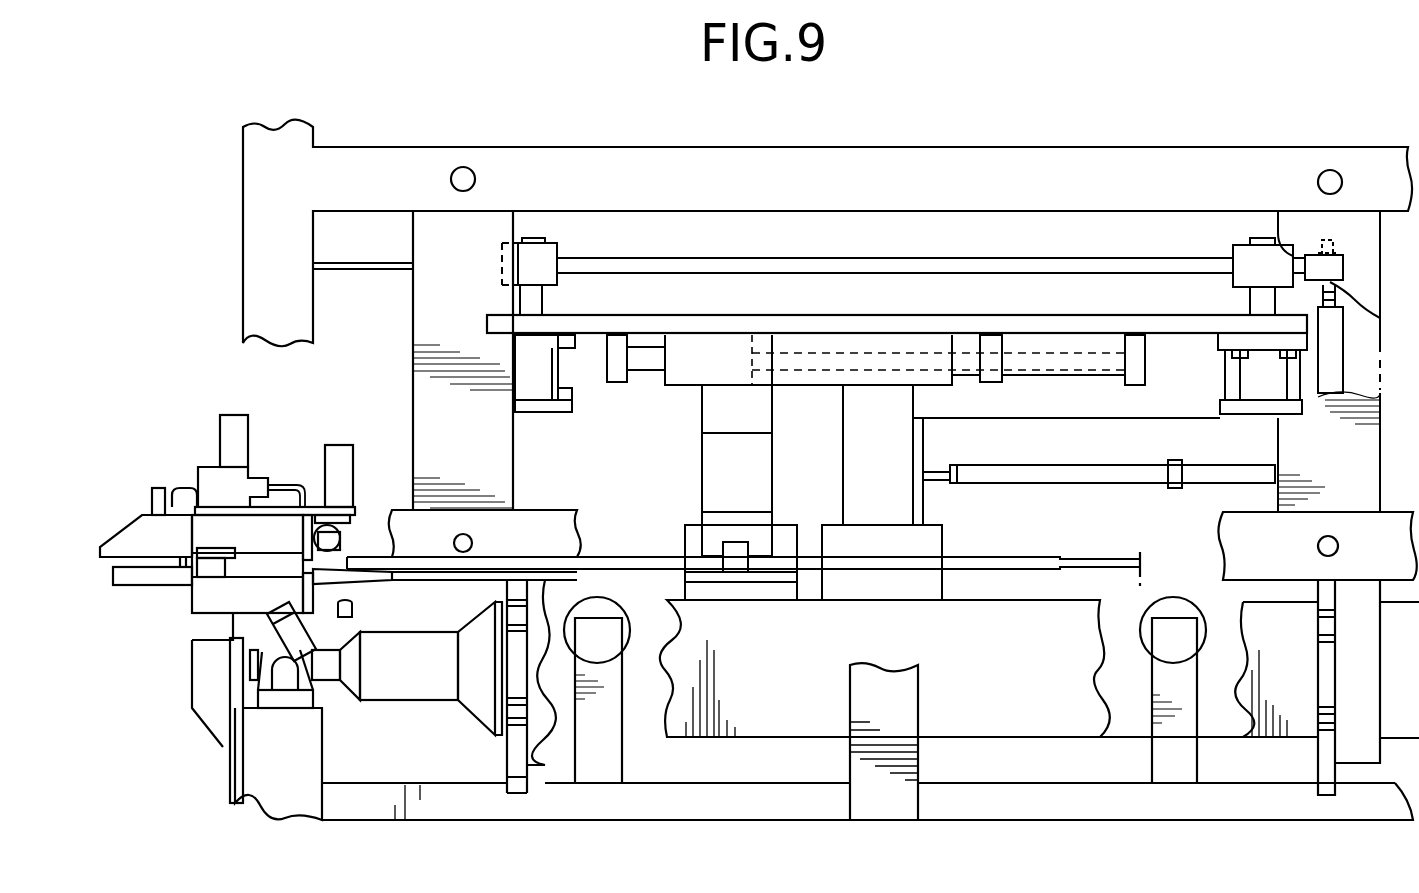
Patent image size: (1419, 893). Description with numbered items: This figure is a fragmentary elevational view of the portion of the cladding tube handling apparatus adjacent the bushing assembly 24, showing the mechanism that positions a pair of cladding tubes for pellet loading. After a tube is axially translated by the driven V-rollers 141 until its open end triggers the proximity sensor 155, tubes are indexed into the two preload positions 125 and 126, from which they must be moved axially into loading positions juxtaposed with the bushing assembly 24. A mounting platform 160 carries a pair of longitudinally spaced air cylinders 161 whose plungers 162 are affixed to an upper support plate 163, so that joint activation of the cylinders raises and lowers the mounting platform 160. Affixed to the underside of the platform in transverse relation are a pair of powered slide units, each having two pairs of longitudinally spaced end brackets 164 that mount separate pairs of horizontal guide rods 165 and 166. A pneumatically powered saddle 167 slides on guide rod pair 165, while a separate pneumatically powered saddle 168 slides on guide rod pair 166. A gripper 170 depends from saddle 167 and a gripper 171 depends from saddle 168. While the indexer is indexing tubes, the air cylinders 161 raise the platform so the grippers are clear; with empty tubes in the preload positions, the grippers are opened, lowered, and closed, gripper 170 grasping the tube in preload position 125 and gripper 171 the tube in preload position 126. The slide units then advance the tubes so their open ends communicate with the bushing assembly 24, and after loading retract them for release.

The bushing assembly 24 is at (284, 508).
The preload position 125 is at (1025, 560).
The preload position 126 is at (1124, 558).
The V-rollers 141 is at (616, 612).
The proximity sensor 155 is at (352, 608).
The mounting platform 160 is at (1190, 321).
The air cylinders 161 is at (550, 372).
The plungers 162 is at (542, 300).
The upper support plate 163 is at (1058, 262).
The end brackets 164 is at (623, 373).
The guide rods 165 is at (645, 353).
The guide rods 166 is at (1070, 357).
The pneumatically powered saddle 167 is at (745, 345).
The pneumatically powered saddle 168 is at (920, 343).
The gripper 170 is at (708, 480).
The gripper 171 is at (850, 438).